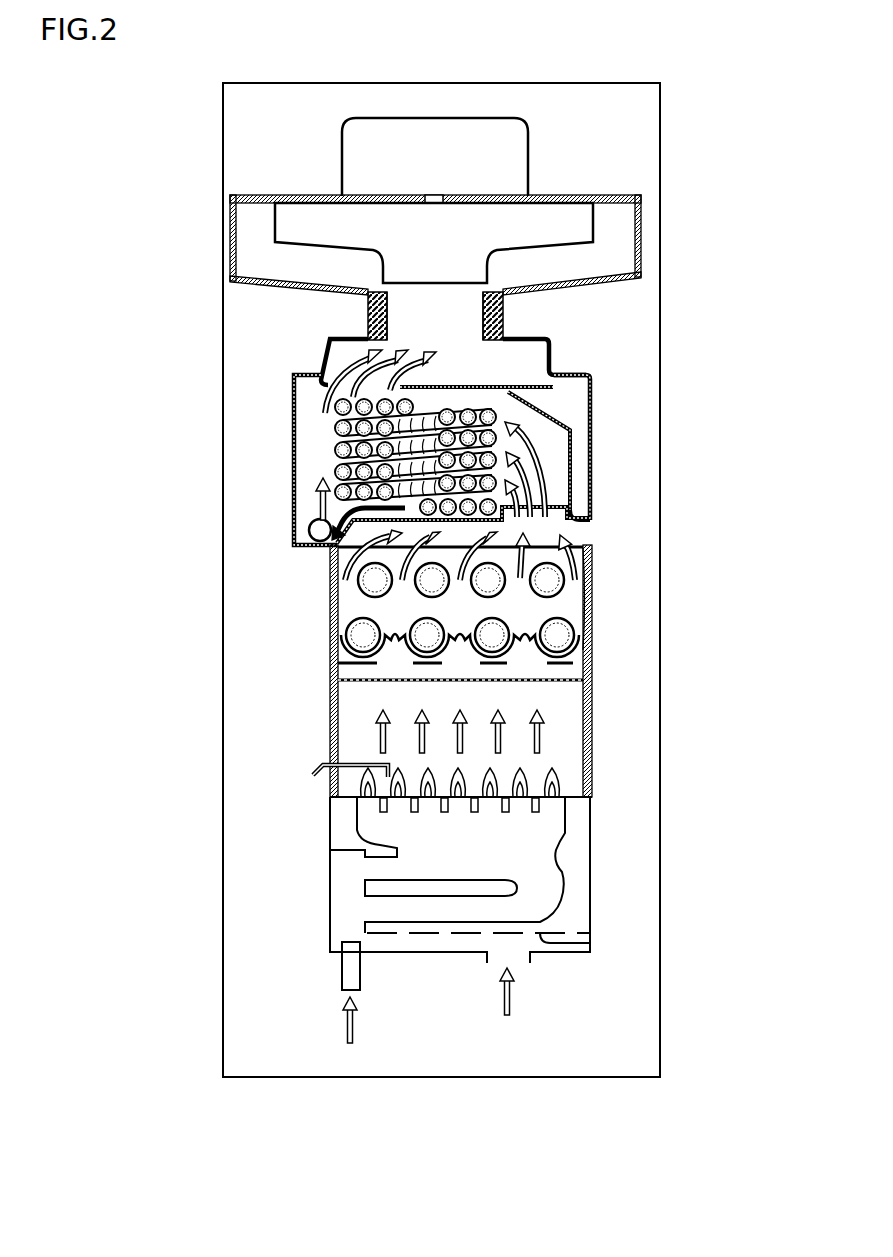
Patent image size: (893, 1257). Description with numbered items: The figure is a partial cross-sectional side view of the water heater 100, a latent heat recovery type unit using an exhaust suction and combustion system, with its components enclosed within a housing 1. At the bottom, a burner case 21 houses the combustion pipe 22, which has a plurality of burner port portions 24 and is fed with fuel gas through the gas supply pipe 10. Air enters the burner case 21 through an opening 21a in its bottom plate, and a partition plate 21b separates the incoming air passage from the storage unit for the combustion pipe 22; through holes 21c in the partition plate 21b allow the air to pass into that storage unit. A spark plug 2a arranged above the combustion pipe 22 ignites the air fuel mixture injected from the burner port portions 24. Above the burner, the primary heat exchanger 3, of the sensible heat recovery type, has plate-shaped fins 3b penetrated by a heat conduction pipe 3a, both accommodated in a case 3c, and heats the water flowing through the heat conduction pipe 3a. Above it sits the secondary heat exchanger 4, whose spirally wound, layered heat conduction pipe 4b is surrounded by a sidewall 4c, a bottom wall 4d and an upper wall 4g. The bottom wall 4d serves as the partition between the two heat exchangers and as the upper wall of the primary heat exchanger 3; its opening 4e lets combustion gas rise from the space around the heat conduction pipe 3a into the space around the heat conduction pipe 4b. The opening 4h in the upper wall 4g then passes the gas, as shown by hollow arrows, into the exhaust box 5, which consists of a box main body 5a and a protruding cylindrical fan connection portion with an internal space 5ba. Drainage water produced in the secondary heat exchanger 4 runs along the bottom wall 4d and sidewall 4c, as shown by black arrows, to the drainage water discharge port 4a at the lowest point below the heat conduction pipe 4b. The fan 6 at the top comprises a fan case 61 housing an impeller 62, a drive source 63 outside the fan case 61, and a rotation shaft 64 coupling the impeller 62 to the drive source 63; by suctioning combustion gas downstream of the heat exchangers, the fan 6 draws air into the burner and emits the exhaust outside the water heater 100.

The water heater 100 is at (762, 183).
The housing 1 is at (660, 265).
The fan 6 is at (548, 182).
The fan case 61 is at (262, 195).
The impeller 62 is at (315, 222).
The drive source 63 is at (435, 143).
The rotation shaft 64 is at (430, 196).
The exhaust box 5 is at (565, 358).
The box main body 5a is at (505, 330).
The internal space 5ba is at (460, 318).
The secondary heat exchanger 4 is at (607, 418).
The drainage water discharge port 4a is at (310, 533).
The heat conduction pipe 4b is at (333, 452).
The sidewall 4c is at (590, 472).
The bottom wall 4d is at (590, 500).
The opening 4e is at (545, 526).
The upper wall 4g is at (460, 395).
The opening 4h is at (323, 405).
The primary heat exchanger 3 is at (607, 589).
The heat conduction pipe 3a is at (575, 630).
The plate-shaped fins 3b is at (575, 655).
The case 3c is at (588, 608).
The spark plug 2a is at (385, 763).
The burner port portions 24 is at (552, 804).
The burner case 21 is at (590, 890).
The opening 21a is at (517, 960).
The partition plate 21b is at (548, 948).
The through holes 21c is at (573, 933).
The combustion pipe 22 is at (562, 868).
The gas supply pipe 10 is at (345, 960).